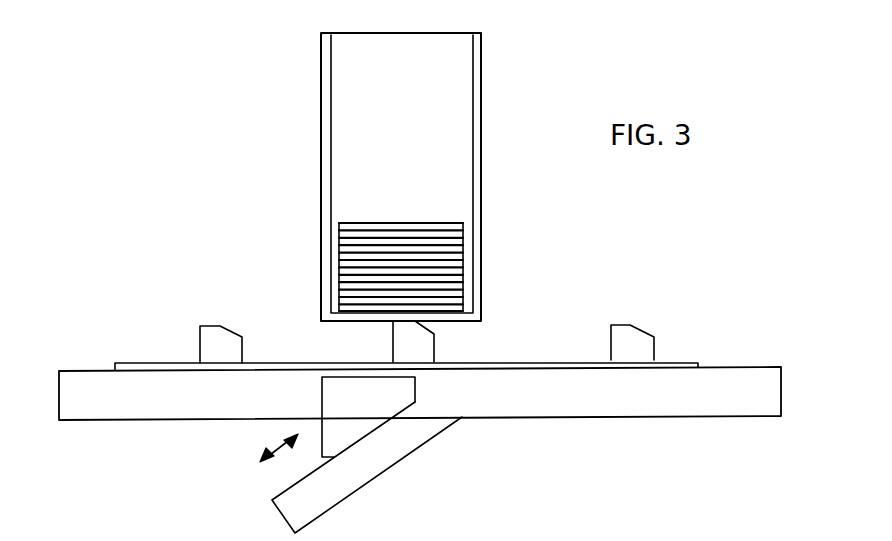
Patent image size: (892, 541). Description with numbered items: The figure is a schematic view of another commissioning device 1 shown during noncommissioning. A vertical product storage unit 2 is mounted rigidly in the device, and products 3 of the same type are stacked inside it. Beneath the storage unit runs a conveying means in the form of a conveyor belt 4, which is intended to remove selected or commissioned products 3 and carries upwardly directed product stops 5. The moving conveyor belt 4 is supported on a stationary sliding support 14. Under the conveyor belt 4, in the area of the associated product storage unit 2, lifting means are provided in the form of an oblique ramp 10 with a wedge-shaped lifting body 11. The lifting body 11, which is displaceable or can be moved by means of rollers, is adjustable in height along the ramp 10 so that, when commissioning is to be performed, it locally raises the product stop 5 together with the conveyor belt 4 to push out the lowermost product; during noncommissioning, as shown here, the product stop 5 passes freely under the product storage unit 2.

The commissioning device 1 is at (212, 158).
The product storage unit 2 is at (473, 93).
The products 3 is at (475, 223).
The conveyor belt 4 is at (128, 368).
The product stop 5 is at (203, 332).
The oblique ramp 10 is at (385, 438).
The wedge-shaped lifting body 11 is at (342, 432).
The stationary sliding support 14 is at (175, 410).